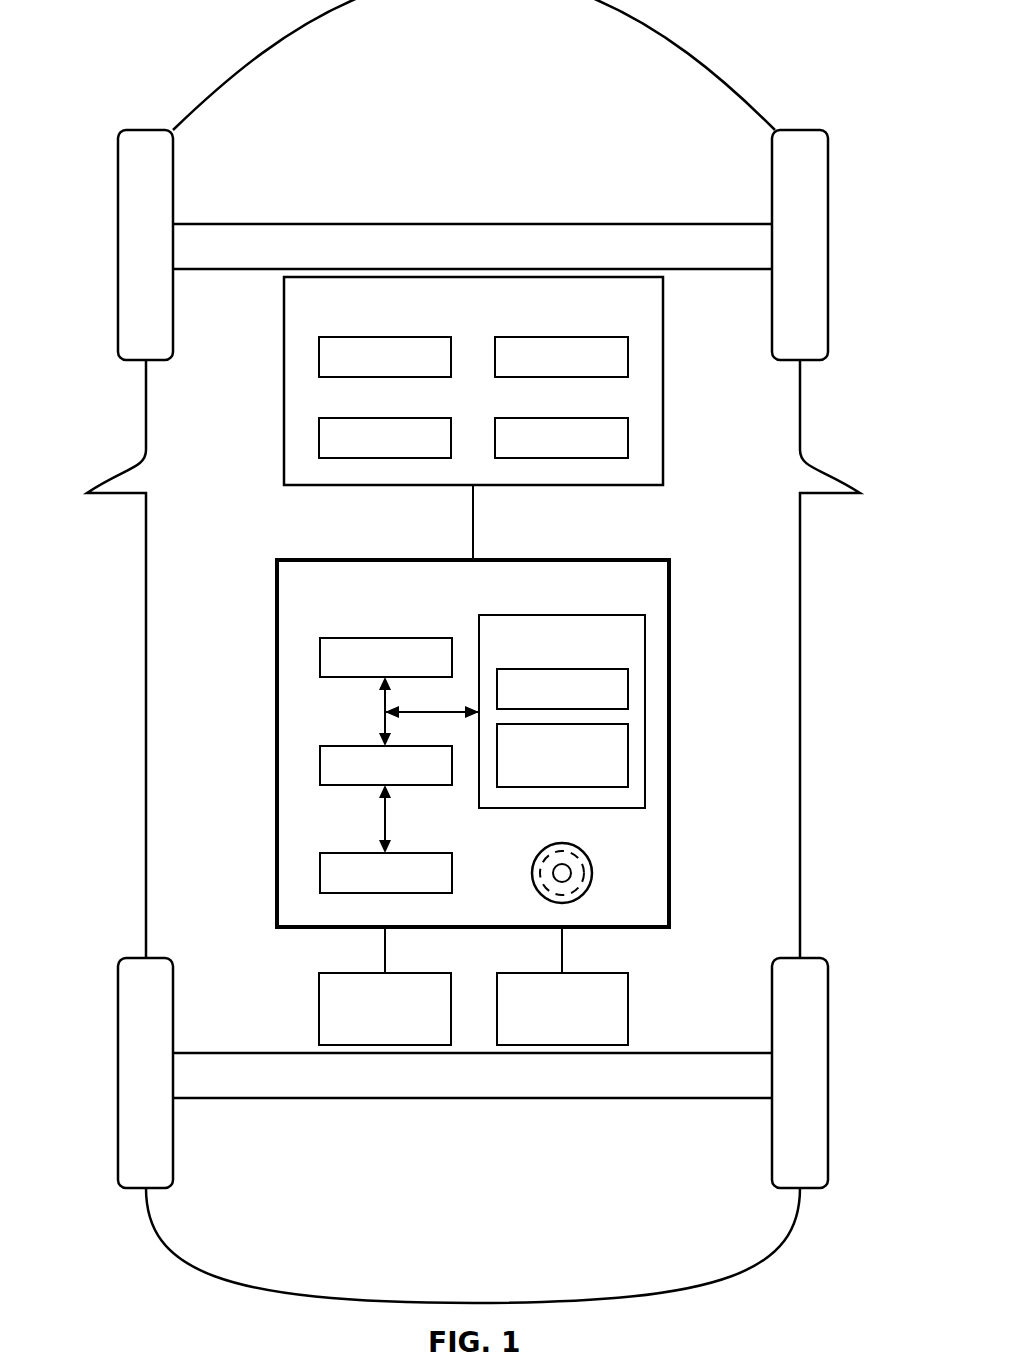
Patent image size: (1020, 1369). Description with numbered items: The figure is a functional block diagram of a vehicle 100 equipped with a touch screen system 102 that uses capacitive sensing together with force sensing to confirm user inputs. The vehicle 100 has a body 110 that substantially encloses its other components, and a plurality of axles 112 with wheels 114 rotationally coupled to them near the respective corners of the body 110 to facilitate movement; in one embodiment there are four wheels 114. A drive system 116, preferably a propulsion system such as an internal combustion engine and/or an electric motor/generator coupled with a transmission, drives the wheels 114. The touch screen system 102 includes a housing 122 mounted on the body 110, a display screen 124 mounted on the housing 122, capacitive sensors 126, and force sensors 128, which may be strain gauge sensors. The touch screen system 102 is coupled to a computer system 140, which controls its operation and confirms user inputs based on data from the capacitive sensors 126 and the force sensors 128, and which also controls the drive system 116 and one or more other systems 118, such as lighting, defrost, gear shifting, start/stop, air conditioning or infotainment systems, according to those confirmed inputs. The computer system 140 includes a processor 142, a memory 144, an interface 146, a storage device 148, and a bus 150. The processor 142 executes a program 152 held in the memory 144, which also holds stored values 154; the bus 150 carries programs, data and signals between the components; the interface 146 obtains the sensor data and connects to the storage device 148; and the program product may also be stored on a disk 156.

The vehicle 100 is at (150, 27).
The touch screen system 102 is at (345, 304).
The body 110 is at (146, 583).
The axles 112 is at (471, 214).
The wheels 114 is at (128, 248).
The drive system 116 is at (355, 973).
The other systems 118 is at (532, 973).
The housing 122 is at (317, 357).
The display screen 124 is at (628, 357).
The capacitive sensors 126 is at (563, 418).
The force sensors 128 is at (387, 418).
The computer system 140 is at (350, 560).
The processor 142 is at (385, 638).
The memory 144 is at (612, 701).
The interface 146 is at (352, 746).
The storage device 148 is at (352, 853).
The bus 150 is at (383, 716).
The program 152 is at (630, 690).
The stored values 154 is at (630, 756).
The disk 156 is at (593, 873).